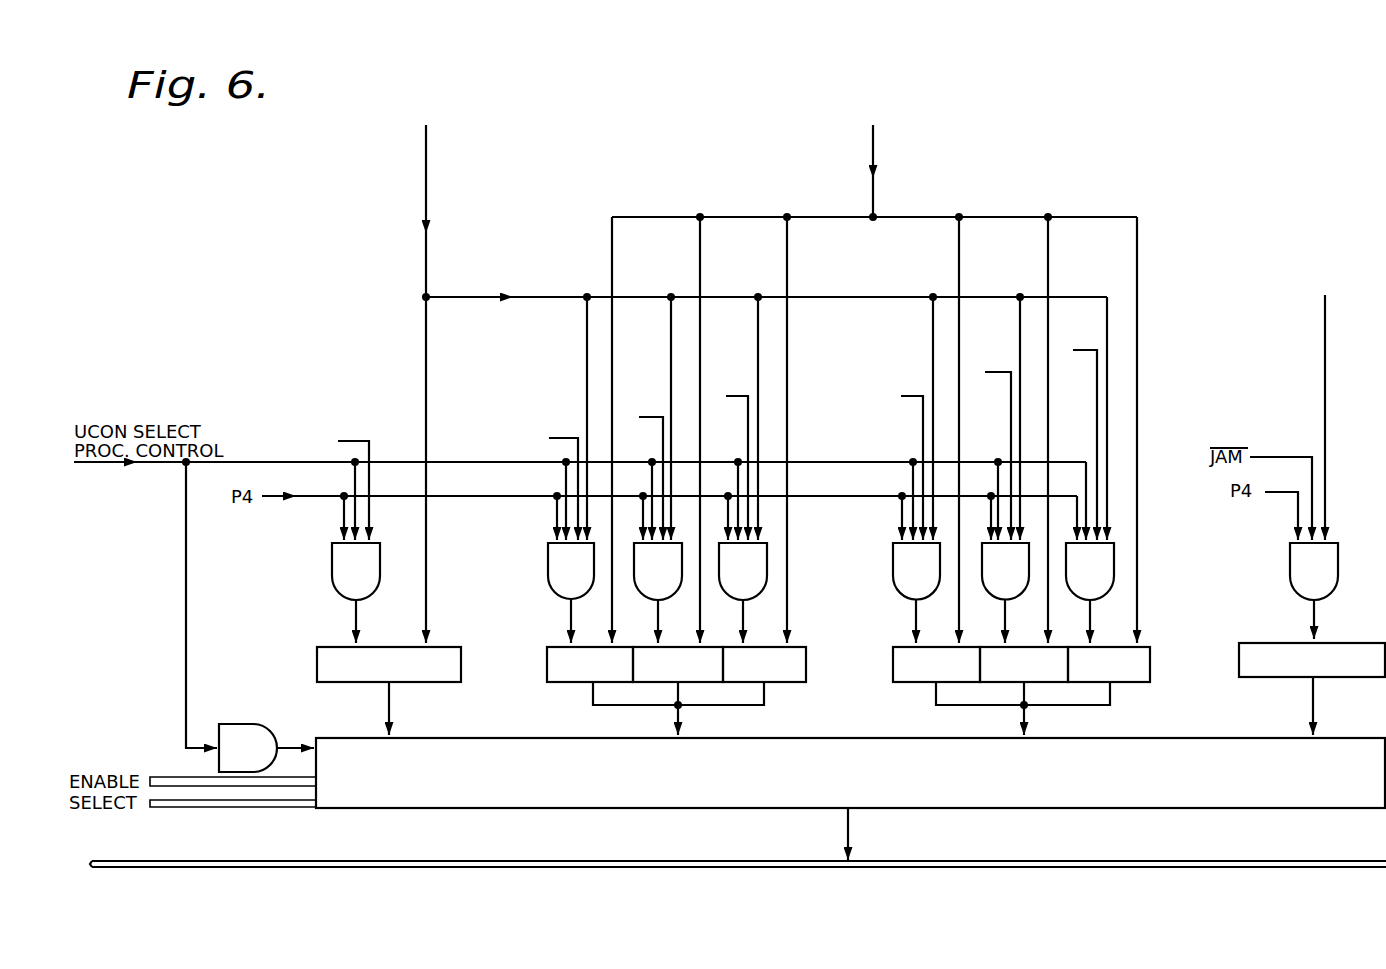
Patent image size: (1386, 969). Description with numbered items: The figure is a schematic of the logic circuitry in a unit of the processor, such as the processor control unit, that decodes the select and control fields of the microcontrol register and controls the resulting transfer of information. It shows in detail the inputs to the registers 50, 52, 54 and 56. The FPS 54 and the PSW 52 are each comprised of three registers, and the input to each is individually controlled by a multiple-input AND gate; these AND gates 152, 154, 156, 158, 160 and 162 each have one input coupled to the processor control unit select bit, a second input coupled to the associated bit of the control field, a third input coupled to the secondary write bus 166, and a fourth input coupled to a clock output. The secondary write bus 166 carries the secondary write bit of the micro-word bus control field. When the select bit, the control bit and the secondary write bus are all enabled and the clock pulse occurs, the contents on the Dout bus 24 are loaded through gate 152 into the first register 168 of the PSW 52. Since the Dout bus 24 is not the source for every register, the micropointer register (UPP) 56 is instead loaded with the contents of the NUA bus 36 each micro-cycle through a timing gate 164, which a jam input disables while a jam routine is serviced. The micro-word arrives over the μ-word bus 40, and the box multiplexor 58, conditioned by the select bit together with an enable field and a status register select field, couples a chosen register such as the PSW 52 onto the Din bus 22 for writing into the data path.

The Din bus 22 is at (700, 860).
The Dout bus 24 is at (874, 349).
The NUA bus 36 is at (1324, 383).
The μ-word bus 40 is at (426, 351).
The register 50 is at (435, 682).
The processor status register (PSW) 52 is at (699, 691).
The FPS register 54 is at (1021, 691).
The micropointer register (UPP) 56 is at (1275, 677).
The box multiplexor 58 is at (1070, 808).
The AND gate 152 is at (548, 578).
The AND gate 154 is at (667, 600).
The AND gate 156 is at (752, 600).
The AND gate 158 is at (893, 578).
The AND gate 160 is at (1018, 600).
The AND gate 162 is at (1100, 598).
The timing gate 164 is at (1290, 566).
The secondary write bus 166 is at (487, 296).
The first register 168 is at (590, 664).